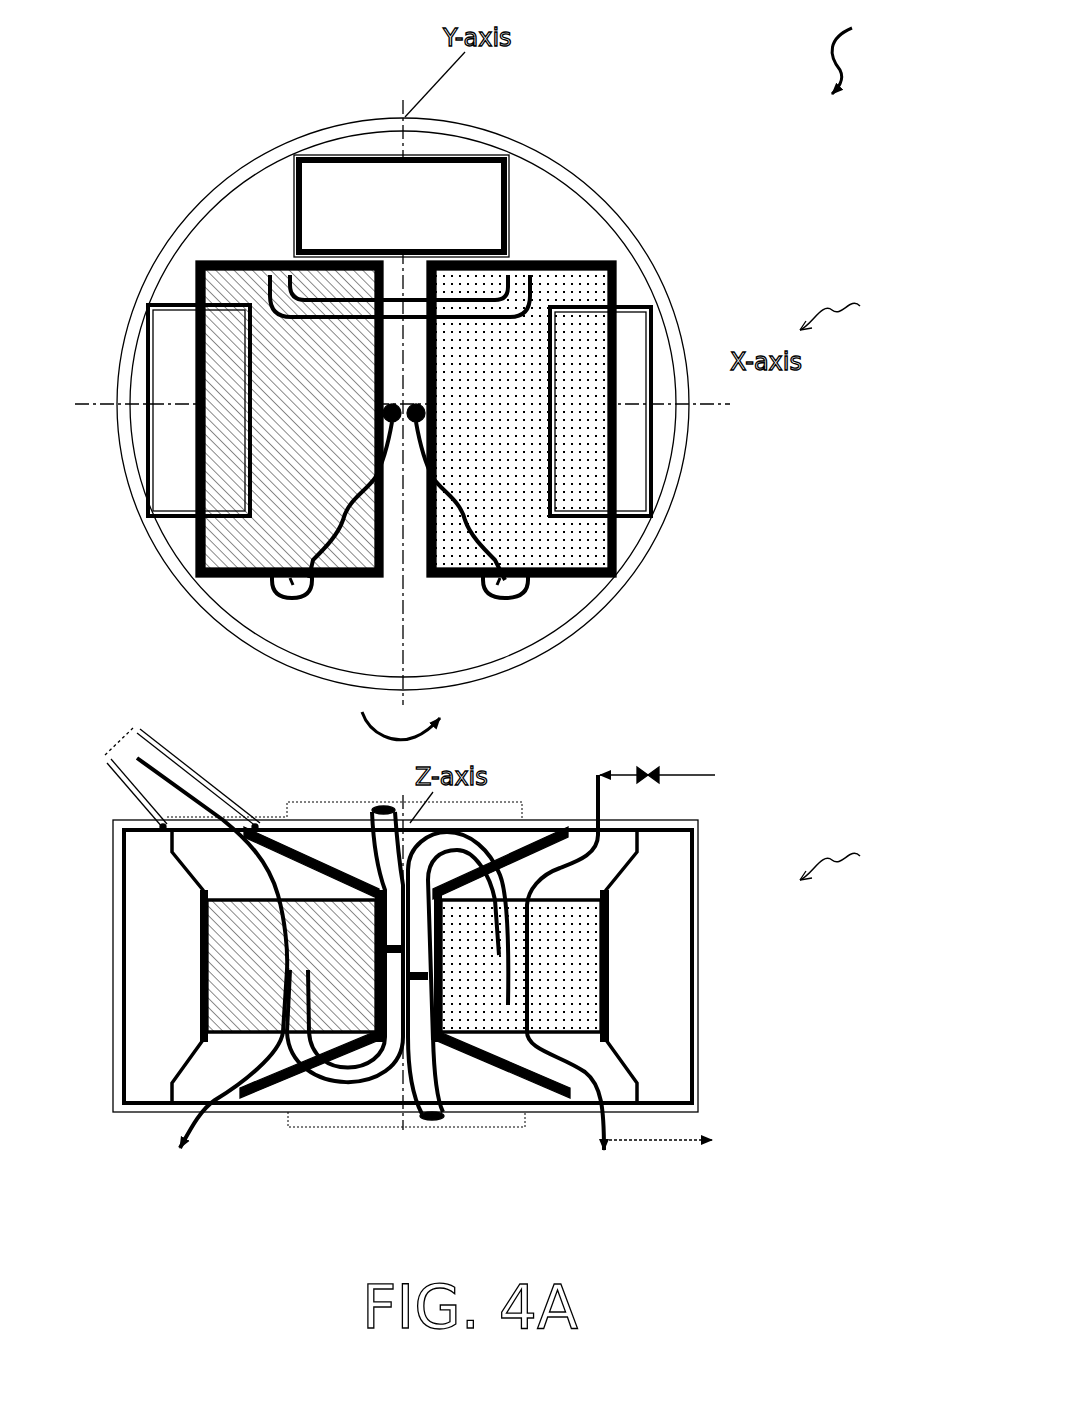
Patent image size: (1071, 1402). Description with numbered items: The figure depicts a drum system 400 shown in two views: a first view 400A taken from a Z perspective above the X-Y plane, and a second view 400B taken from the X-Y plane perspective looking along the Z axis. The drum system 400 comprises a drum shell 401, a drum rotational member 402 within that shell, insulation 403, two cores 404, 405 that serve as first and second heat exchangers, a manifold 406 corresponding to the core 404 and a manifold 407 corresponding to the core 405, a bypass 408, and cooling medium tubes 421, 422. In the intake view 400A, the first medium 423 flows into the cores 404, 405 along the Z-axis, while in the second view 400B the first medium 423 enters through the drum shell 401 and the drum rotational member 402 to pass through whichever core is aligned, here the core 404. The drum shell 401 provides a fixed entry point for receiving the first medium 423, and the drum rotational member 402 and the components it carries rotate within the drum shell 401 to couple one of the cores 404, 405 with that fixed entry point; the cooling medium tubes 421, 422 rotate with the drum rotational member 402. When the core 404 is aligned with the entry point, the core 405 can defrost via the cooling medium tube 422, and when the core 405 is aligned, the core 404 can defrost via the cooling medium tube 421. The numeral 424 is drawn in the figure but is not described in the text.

The drum system 400 is at (877, 47).
The first view 400A is at (862, 314).
The second view 400B is at (862, 864).
The drum shell 401 is at (320, 130).
The drum rotational member 402 is at (383, 132).
The insulation 403 is at (512, 181).
The core 404 is at (253, 292).
The core 405 is at (541, 297).
The manifold 406 is at (165, 307).
The manifold 407 is at (636, 303).
The bypass 408 is at (458, 183).
The cooling medium tube 421 is at (273, 587).
The cooling medium tube 422 is at (525, 597).
The first medium 423 is at (180, 1133).
The outlet line 424 is at (602, 1120).